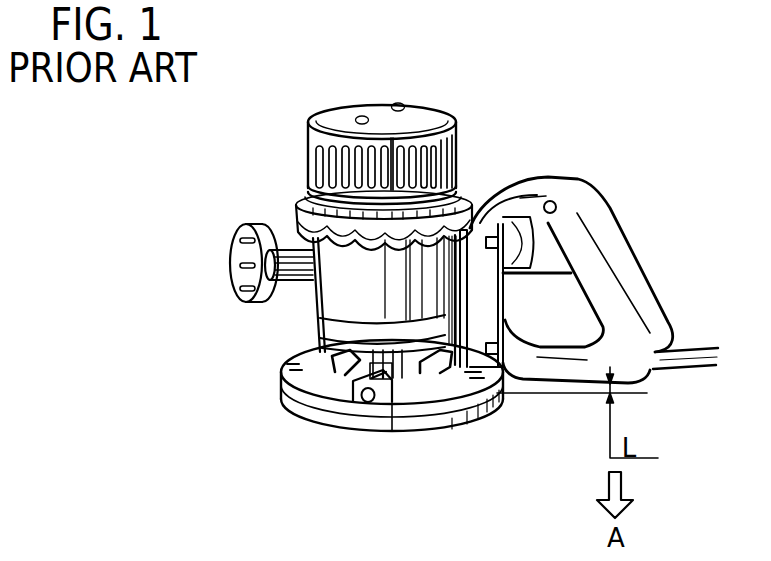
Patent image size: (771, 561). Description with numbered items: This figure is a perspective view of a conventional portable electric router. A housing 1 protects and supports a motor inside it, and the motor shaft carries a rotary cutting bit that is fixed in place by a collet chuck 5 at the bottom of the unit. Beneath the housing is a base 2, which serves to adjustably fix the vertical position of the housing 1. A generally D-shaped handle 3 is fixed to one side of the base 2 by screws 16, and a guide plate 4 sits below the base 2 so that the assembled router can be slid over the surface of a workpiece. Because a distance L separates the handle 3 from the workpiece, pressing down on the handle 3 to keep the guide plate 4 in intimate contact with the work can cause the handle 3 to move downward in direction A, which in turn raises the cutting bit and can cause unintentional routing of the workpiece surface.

The housing 1 is at (456, 150).
The base 2 is at (347, 285).
The handle 3 is at (627, 238).
The guide plate 4 is at (320, 424).
The collet chuck 5 is at (412, 373).
The screws 16 is at (497, 347).